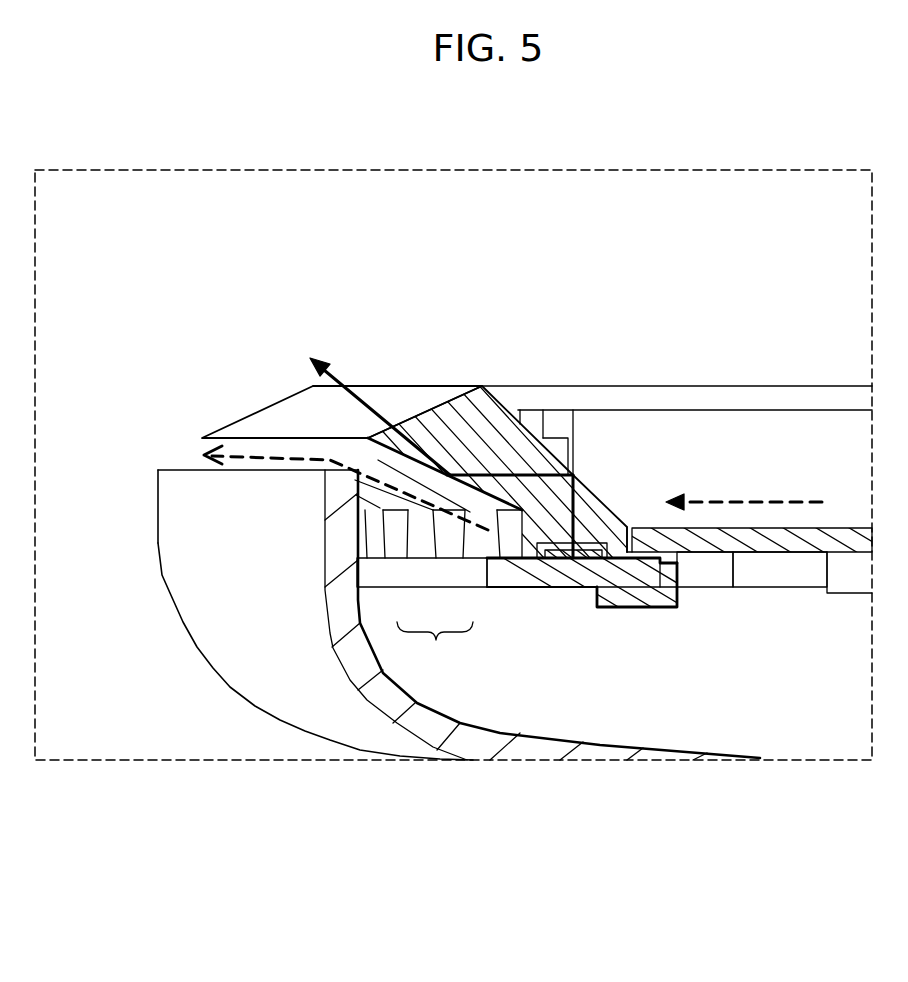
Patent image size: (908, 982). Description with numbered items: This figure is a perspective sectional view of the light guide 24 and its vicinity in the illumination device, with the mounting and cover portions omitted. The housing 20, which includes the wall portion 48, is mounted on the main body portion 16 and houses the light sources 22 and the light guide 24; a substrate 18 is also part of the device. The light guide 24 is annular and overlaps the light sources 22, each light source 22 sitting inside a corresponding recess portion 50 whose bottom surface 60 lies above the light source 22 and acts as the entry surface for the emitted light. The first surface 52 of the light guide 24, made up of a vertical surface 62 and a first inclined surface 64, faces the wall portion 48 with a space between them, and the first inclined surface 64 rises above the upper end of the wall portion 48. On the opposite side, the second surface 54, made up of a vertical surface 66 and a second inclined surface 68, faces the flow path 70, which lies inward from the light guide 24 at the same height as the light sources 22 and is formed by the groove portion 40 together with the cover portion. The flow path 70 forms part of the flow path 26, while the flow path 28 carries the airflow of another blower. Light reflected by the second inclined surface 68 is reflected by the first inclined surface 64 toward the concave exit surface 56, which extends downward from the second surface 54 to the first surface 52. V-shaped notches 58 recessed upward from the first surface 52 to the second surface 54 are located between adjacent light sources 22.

The main body portion 16 is at (780, 553).
The substrate 18 is at (575, 560).
The housing 20 is at (224, 645).
The light sources 22 is at (555, 573).
The light guide 24 is at (270, 400).
The flow path 26 is at (712, 518).
The flow path 28 is at (482, 590).
The groove portion 40 is at (812, 522).
The wall portion 48 is at (240, 505).
The recess portions 50 is at (611, 555).
The first surface 52 is at (435, 645).
The second surface 54 is at (625, 431).
The exit surface 56 is at (419, 402).
The notches 58 is at (481, 544).
The bottom surface 60 is at (590, 558).
The vertical surface 62 is at (449, 538).
The first inclined surface 64 is at (422, 494).
The vertical surface 66 is at (636, 540).
The second inclined surface 68 is at (602, 505).
The flow path 70 is at (738, 514).